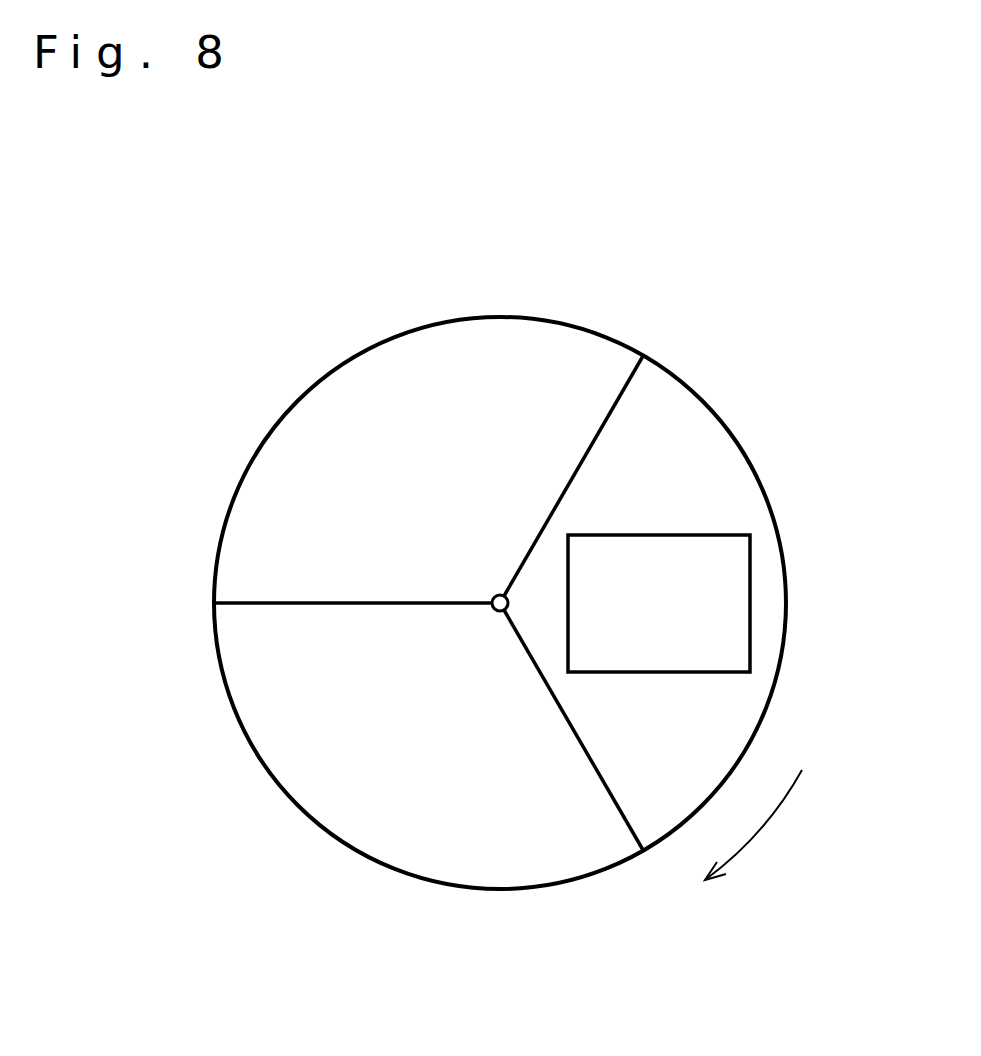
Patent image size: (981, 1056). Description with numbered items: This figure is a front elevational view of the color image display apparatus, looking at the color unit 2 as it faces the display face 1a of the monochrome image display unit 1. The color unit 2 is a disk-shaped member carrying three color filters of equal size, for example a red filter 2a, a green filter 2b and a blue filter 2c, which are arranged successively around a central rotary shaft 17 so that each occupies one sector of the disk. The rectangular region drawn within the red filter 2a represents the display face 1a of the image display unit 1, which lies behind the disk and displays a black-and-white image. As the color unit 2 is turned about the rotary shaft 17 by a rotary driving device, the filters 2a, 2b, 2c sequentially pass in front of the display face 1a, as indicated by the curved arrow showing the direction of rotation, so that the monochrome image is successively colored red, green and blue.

The monochrome image display unit 1 is at (767, 711).
The display face 1a is at (730, 603).
The color unit 2 is at (500, 597).
The red color filter 2a is at (731, 457).
The green color filter 2b is at (347, 406).
The blue color filter 2c is at (296, 756).
The rotary shaft 17 is at (491, 672).